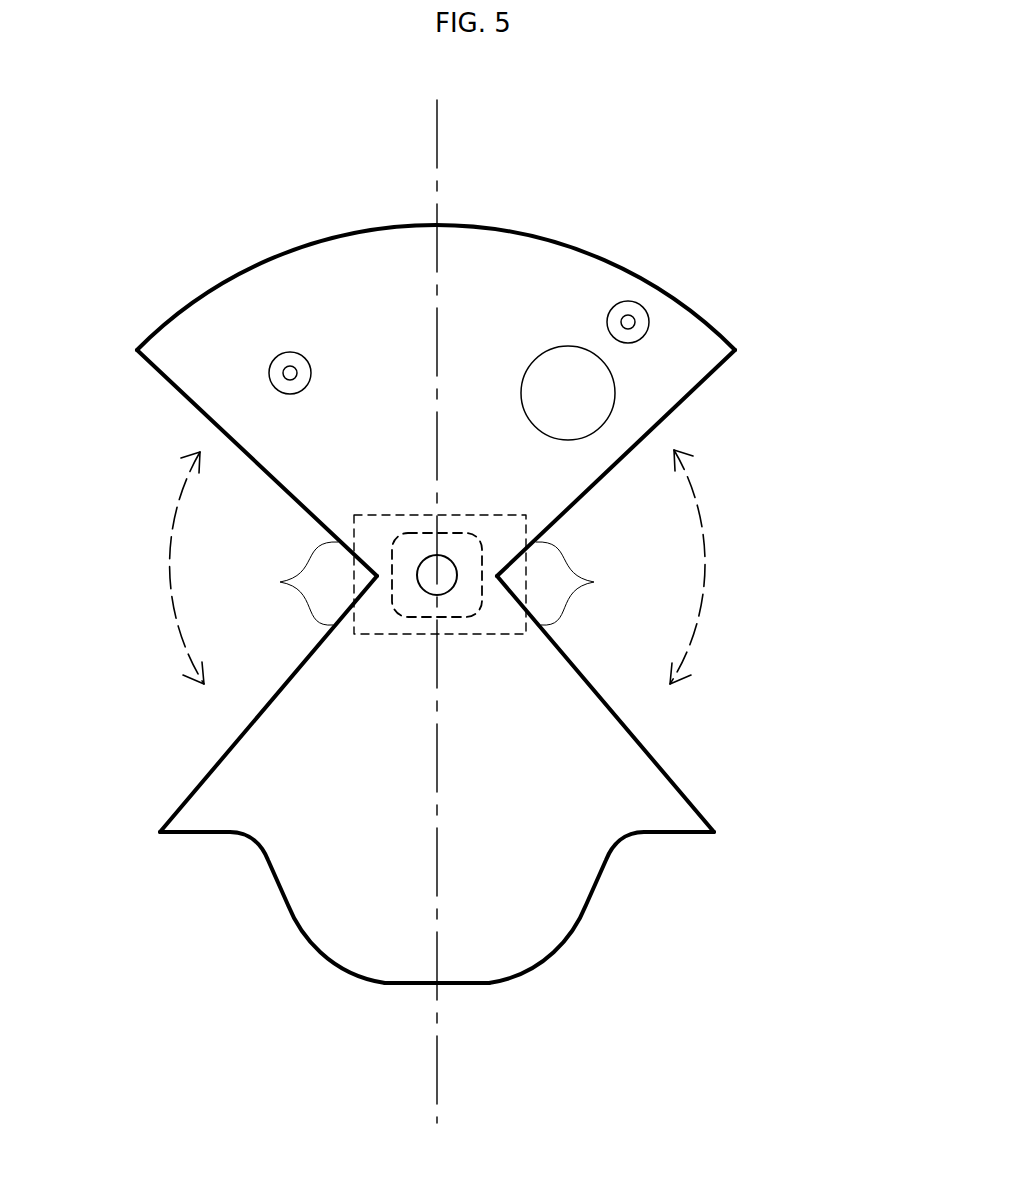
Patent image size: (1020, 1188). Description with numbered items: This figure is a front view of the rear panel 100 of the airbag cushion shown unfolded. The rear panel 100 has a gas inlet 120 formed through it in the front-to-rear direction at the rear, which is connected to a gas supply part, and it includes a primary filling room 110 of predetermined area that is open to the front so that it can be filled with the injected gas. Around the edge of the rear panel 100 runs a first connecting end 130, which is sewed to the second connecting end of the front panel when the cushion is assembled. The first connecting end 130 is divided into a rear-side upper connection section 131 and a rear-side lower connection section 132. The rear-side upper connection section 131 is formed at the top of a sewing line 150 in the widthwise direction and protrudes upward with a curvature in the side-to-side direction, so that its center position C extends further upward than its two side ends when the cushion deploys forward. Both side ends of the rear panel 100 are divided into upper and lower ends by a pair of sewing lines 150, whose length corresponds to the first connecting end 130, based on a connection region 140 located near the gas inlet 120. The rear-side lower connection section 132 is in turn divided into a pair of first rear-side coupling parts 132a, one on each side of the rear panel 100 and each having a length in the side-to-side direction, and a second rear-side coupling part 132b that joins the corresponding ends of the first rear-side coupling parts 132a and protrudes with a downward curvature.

The rear panel 100 is at (474, 566).
The primary filling room 110 is at (212, 358).
The gas inlet 120 is at (417, 573).
The first connecting end 130 is at (529, 657).
The rear-side upper connection section 131 is at (709, 322).
The rear-side lower connection section 132 is at (499, 917).
The first rear-side coupling part 132a is at (663, 833).
The second rear-side coupling part 132b is at (467, 983).
The connection region 140 is at (413, 513).
The sewing line 150 is at (439, 583).
The center position C is at (437, 1078).